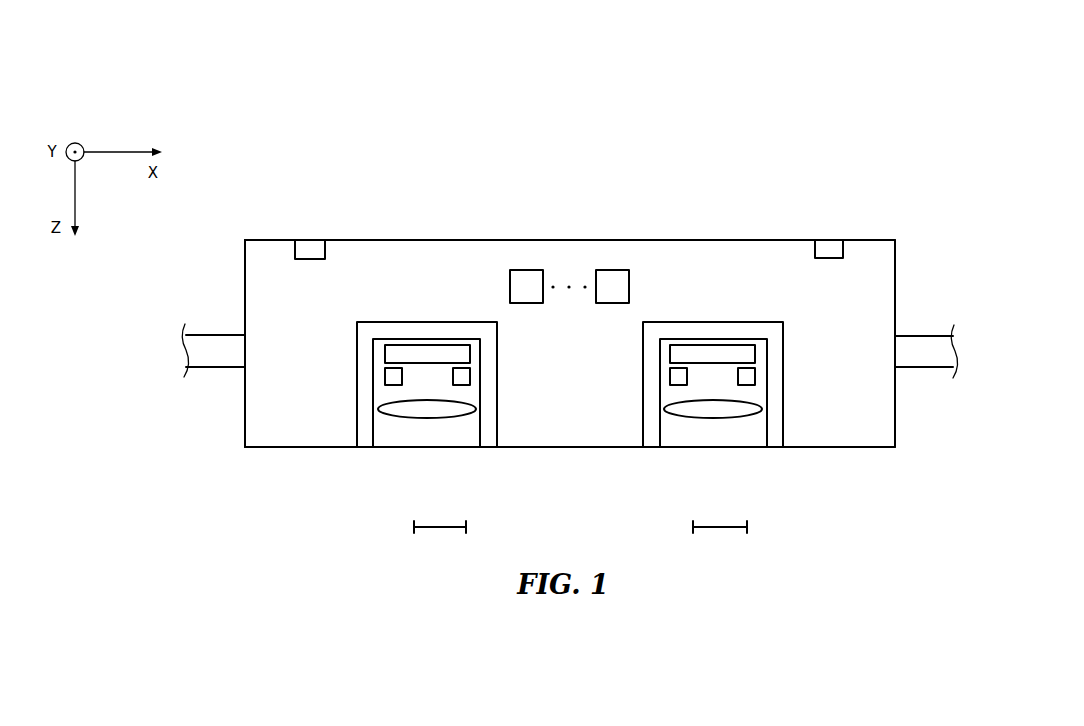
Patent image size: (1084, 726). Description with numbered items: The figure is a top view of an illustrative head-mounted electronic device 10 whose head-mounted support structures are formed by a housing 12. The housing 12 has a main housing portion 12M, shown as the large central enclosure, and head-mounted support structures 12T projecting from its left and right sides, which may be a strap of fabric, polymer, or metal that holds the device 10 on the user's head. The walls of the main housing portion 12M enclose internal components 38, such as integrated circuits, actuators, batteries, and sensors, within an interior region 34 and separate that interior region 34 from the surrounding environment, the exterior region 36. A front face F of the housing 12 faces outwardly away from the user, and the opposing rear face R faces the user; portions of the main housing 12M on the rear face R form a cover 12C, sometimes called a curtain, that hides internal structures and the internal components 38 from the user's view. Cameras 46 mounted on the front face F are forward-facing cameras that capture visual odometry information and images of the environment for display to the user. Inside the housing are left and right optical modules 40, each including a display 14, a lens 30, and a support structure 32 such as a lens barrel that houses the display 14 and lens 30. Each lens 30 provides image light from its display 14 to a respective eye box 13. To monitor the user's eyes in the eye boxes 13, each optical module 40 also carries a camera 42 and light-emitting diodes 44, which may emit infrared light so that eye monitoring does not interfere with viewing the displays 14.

The electronic device 10 is at (836, 97).
The housing 12 is at (641, 248).
The main housing portion 12M is at (274, 236).
The cover 12C is at (263, 449).
The head-mounted support structures 12T is at (210, 347).
The eye boxes 13 is at (468, 524).
The displays 14 is at (450, 351).
The lens 30 is at (664, 410).
The support structure 32 is at (370, 332).
The interior region 34 is at (864, 282).
The exterior region 36 is at (428, 211).
The internal components 38 is at (612, 273).
The optical modules 40 is at (346, 447).
The camera 42 is at (670, 378).
The light-emitting diodes 44 is at (386, 377).
The cameras 46 is at (312, 247).
The front face F is at (703, 221).
The rear face R is at (854, 479).